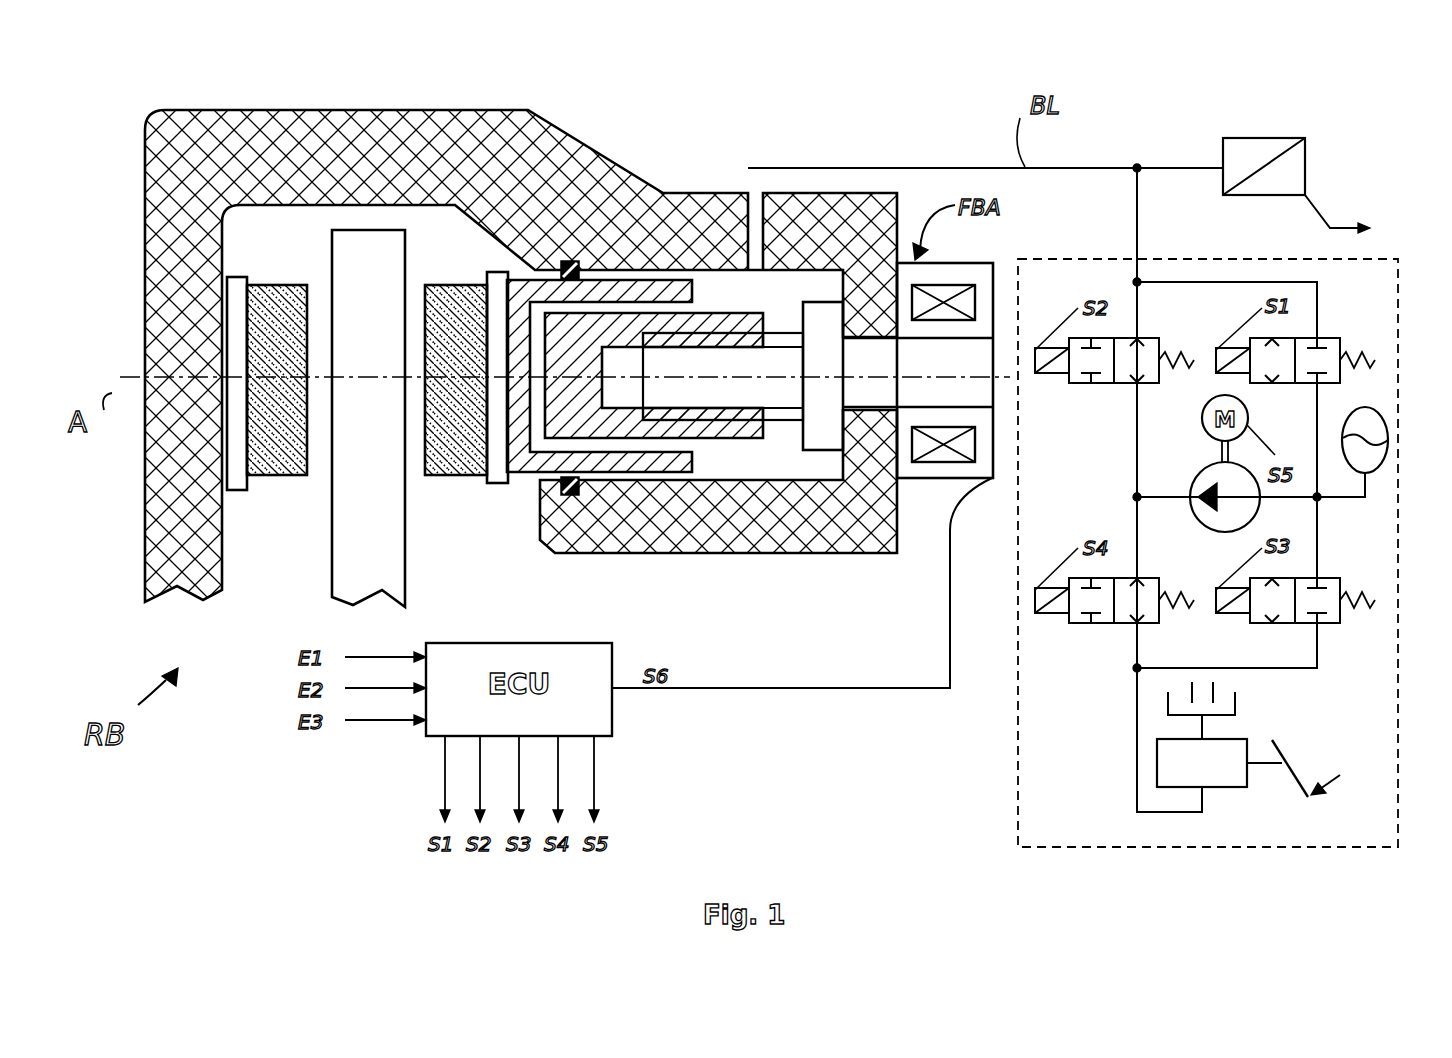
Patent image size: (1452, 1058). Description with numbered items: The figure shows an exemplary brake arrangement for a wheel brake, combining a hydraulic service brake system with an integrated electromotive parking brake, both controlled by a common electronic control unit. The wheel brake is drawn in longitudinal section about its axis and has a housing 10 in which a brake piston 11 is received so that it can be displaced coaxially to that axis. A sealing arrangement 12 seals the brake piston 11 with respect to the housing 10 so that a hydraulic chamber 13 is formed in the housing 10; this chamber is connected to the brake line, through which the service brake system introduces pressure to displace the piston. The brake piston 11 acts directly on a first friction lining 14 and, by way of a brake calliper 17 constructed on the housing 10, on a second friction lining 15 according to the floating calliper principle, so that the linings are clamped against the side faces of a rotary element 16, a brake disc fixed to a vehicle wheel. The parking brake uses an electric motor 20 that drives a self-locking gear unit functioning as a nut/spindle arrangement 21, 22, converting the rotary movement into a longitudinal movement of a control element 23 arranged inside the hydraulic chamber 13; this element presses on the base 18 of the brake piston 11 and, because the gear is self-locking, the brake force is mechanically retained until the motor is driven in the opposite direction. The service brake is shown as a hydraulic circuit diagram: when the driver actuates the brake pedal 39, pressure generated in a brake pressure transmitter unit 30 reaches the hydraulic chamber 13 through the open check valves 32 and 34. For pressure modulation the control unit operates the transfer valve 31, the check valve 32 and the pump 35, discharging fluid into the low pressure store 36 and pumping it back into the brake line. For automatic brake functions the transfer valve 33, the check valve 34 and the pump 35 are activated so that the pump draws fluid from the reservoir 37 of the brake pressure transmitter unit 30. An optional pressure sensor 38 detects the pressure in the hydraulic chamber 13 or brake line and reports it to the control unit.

The housing 10 is at (600, 185).
The brake piston 11 is at (522, 458).
The sealing arrangement 12 is at (557, 486).
The hydraulic chamber 13 is at (782, 304).
The first friction lining 14 is at (455, 453).
The second friction lining 15 is at (273, 465).
The rotary element 16 is at (355, 553).
The brake calliper 17 is at (240, 130).
The base of the brake piston 18 is at (535, 300).
The electric motor 20 is at (960, 468).
The nut/spindle arrangement 21 is at (786, 395).
The nut/spindle arrangement 22 is at (712, 430).
The control element 23 is at (547, 397).
The brake pressure transmitter unit 30 is at (1207, 781).
The transfer valve 31 is at (1335, 340).
The check valve 32 is at (1148, 340).
The transfer valve 33 is at (1335, 580).
The check valve 34 is at (1148, 580).
The pump 35 is at (1200, 485).
The low pressure store 36 is at (1382, 455).
The reservoir 37 is at (1227, 700).
The pressure sensor 38 is at (1267, 148).
The brake pedal 39 is at (1297, 773).